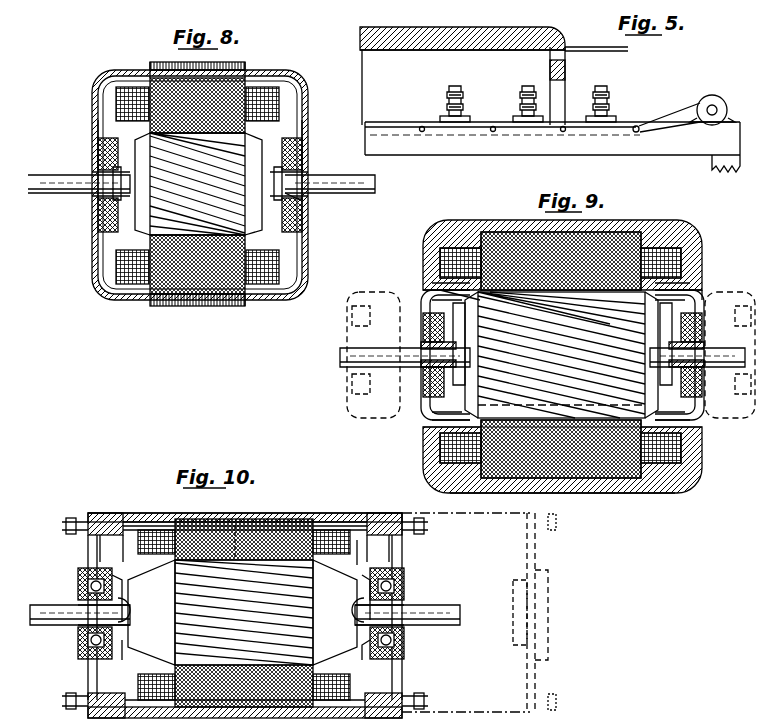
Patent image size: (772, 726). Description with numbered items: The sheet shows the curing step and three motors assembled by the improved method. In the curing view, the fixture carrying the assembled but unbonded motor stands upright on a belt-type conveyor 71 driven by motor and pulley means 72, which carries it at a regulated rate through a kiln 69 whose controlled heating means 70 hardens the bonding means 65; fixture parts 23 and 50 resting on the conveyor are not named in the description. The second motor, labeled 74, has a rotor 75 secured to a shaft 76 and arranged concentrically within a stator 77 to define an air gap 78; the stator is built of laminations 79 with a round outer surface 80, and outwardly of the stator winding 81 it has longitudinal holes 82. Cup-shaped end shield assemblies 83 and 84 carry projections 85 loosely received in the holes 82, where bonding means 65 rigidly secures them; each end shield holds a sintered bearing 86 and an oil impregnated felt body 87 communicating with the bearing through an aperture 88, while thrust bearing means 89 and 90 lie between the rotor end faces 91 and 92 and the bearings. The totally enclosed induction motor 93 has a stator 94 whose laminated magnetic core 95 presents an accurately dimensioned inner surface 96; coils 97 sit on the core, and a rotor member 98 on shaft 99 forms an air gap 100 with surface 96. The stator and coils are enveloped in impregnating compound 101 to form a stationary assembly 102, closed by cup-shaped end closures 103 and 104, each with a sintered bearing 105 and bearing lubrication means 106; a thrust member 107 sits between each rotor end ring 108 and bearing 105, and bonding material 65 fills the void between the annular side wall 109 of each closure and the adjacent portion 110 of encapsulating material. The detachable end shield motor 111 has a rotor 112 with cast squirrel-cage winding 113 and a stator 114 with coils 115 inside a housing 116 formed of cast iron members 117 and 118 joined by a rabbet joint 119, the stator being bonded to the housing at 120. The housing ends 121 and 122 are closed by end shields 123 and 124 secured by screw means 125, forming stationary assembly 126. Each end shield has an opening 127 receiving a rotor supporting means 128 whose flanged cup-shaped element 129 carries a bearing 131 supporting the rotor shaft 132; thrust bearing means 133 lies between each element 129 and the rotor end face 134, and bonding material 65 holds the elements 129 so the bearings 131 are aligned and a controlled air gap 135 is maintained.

In FIG. 5, the bolt 23 is at (465, 102).
In FIG. 5, the pad 50 is at (470, 119).
In FIG. 8, the bonding means 65 is at (205, 306).
In FIG. 9, the bonding means 65 is at (702, 451).
In FIG. 10, the bonding means 65 is at (402, 571).
In FIG. 5, the kiln 69 is at (517, 65).
In FIG. 5, the controlled heating means 70 is at (593, 47).
In FIG. 5, the belt-type conveyor 71 is at (668, 118).
In FIG. 5, the motor and pulley means 72 is at (718, 101).
In FIG. 8, the motor housing 74 is at (329, 77).
In FIG. 8, the rotor 75 is at (198, 184).
In FIG. 8, the shaft 76 is at (201, 182).
In FIG. 8, the stator 77 is at (165, 66).
In FIG. 8, the air gap 78 is at (240, 130).
In FIG. 8, the laminations 79 is at (233, 92).
In FIG. 8, the outer surface 80 is at (218, 66).
In FIG. 8, the stator winding 81 is at (120, 100).
In FIG. 8, the apertures or holes 82 is at (150, 66).
In FIG. 8, the end shield assembly 83 is at (308, 111).
In FIG. 8, the end shield assembly 84 is at (95, 110).
In FIG. 8, the projections 85 is at (245, 306).
In FIG. 8, the sintered bearings 86 is at (95, 172).
In FIG. 8, the oil impregnated felt body 87 is at (104, 152).
In FIG. 8, the aperture 88 is at (305, 167).
In FIG. 8, the thrust bearing means 89 is at (96, 192).
In FIG. 8, the thrust bearing means 90 is at (305, 193).
In FIG. 8, the rotor end face 91 is at (124, 168).
In FIG. 8, the rotor end face 92 is at (278, 204).
In FIG. 9, the induction motor 93 is at (487, 210).
In FIG. 9, the stator 94 is at (612, 248).
In FIG. 9, the laminated magnetic core 95 is at (508, 230).
In FIG. 9, the radially inner surface 96 is at (440, 270).
In FIG. 9, the coils 97 is at (455, 232).
In FIG. 9, the rotor member 98 is at (561, 355).
In FIG. 9, the shaft 99 is at (542, 357).
In FIG. 9, the air gap 100 is at (598, 420).
In FIG. 9, the impregnating compound 101 is at (690, 240).
In FIG. 9, the stationary assembly 102 is at (698, 482).
In FIG. 9, the end closure 103 is at (350, 418).
In FIG. 9, the end closure 104 is at (702, 418).
In FIG. 9, the sintered bearing 105 is at (423, 336).
In FIG. 9, the bearing lubrication means 106 is at (352, 385).
In FIG. 9, the thrust member 107 is at (456, 338).
In FIG. 9, the rotor end ring 108 is at (485, 341).
In FIG. 9, the annular side wall 109 is at (695, 291).
In FIG. 9, the portion of encapsulating material 110 is at (690, 285).
In FIG. 10, the motor 111 is at (51, 687).
In FIG. 10, the rotor 112 is at (244, 612).
In FIG. 10, the cast squirrel-cage winding 113 is at (242, 612).
In FIG. 10, the stator 114 is at (278, 522).
In FIG. 10, the coils 115 is at (148, 530).
In FIG. 10, the housing 116 is at (372, 520).
In FIG. 10, the cast iron member 117 is at (102, 513).
In FIG. 10, the cast iron member 118 is at (306, 520).
In FIG. 10, the rabbet joint 119 is at (255, 520).
In FIG. 10, the bond 120 is at (268, 520).
In FIG. 10, the housing end 121 is at (87, 543).
In FIG. 10, the housing end 122 is at (402, 543).
In FIG. 10, the end shield 123 is at (87, 559).
In FIG. 10, the end shield 124 is at (402, 557).
In FIG. 10, the screw means 125 is at (70, 516).
In FIG. 10, the stationary assembly 126 is at (402, 700).
In FIG. 10, the aperture or opening 127 is at (372, 565).
In FIG. 10, the rotor supporting means 128 is at (78, 583).
In FIG. 10, the flanged cup-shaped element 129 is at (78, 651).
In FIG. 10, the bearing 131 is at (85, 629).
In FIG. 10, the rotor shaft 132 is at (249, 615).
In FIG. 10, the thrust bearing means 133 is at (116, 641).
In FIG. 10, the rotor end face 134 is at (114, 596).
In FIG. 10, the air gap 135 is at (232, 522).